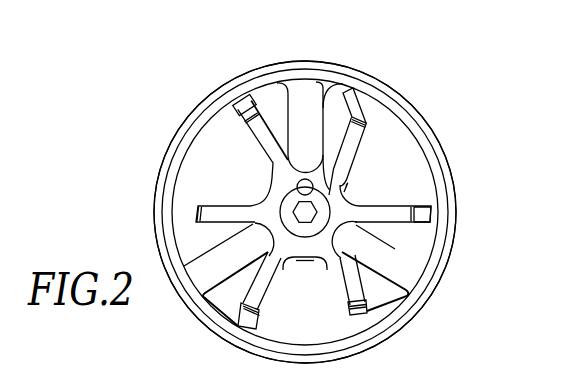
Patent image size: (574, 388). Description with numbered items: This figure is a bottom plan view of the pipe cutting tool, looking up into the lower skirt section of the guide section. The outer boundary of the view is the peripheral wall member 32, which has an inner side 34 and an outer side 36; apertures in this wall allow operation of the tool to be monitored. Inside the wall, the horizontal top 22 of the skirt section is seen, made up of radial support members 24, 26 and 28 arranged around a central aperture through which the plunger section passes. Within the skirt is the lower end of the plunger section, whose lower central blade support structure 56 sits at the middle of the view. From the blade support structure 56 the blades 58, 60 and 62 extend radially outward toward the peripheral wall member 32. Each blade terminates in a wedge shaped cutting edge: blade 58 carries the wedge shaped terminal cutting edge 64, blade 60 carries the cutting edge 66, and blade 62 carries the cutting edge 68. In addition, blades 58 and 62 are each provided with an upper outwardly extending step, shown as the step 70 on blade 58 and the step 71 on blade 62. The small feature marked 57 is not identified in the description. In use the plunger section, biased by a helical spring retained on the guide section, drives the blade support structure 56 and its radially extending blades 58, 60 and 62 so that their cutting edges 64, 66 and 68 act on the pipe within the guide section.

The horizontal top 22 is at (438, 121).
The radial support member 24 is at (224, 240).
The radial support member 26 is at (338, 102).
The radial support member 28 is at (396, 249).
The peripheral wall member 32 is at (397, 333).
The inner side 34 is at (275, 353).
The outer side 36 is at (202, 326).
The lower central blade support structure 56 is at (284, 224).
The locating hole 57 is at (297, 188).
The blade 58 is at (272, 130).
The blade 60 is at (363, 133).
The blade 62 is at (395, 248).
The wedge shaped terminal cutting edge 64 is at (244, 119).
The wedge shaped terminal cutting edge 66 is at (358, 108).
The wedge shaped terminal cutting edge 68 is at (413, 206).
The upper outwardly extending step 70 is at (240, 105).
The upper outwardly extending step 71 is at (431, 214).